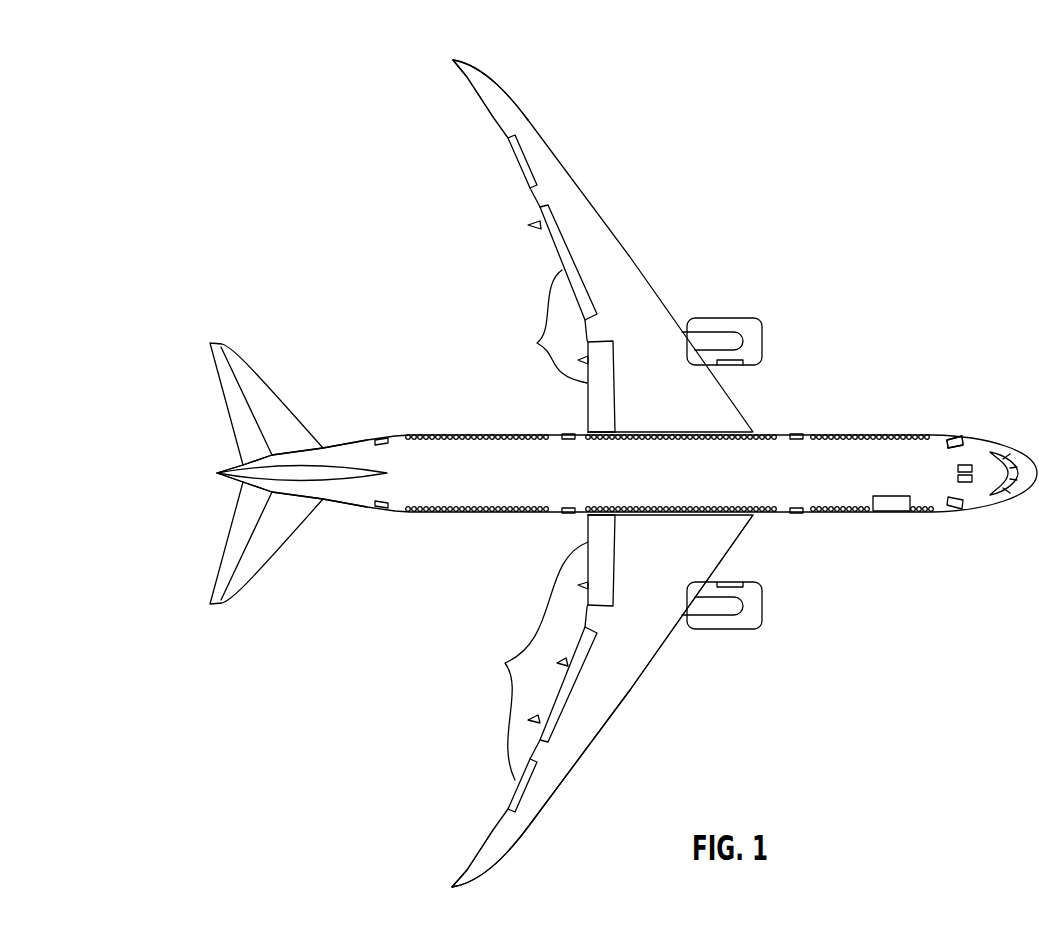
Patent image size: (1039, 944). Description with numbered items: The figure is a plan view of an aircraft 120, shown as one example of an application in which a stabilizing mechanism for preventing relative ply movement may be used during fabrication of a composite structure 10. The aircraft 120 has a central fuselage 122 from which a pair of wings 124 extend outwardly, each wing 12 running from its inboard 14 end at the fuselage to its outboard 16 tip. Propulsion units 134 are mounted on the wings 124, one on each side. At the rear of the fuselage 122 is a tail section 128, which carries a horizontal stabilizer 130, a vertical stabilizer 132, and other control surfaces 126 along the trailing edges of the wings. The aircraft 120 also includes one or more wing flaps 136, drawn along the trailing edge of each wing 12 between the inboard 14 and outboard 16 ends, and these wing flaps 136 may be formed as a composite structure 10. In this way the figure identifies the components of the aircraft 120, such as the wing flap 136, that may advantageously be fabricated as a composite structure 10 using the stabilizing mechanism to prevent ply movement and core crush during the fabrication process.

The composite structure 10 is at (590, 399).
The wing flap 136 is at (627, 452).
The wing 12 is at (627, 313).
The inboard 14 is at (680, 422).
The outboard 16 is at (500, 82).
The aircraft 120 is at (885, 314).
The fuselage 122 is at (937, 447).
The wings 124 is at (610, 717).
The control surfaces 126 is at (537, 345).
The tail section 128 is at (353, 493).
The horizontal stabilizer 130 is at (219, 375).
The vertical stabilizer 132 is at (236, 462).
The propulsion units 134 is at (733, 317).